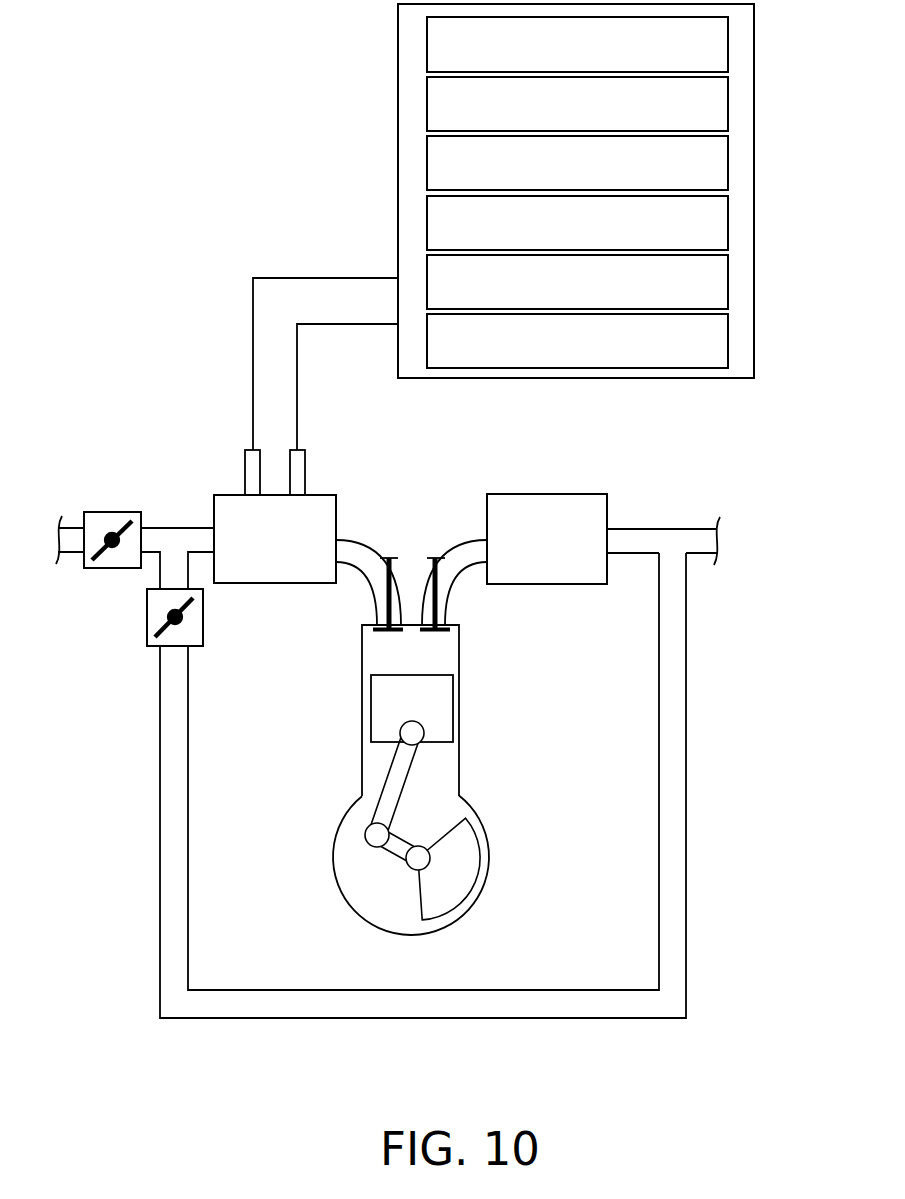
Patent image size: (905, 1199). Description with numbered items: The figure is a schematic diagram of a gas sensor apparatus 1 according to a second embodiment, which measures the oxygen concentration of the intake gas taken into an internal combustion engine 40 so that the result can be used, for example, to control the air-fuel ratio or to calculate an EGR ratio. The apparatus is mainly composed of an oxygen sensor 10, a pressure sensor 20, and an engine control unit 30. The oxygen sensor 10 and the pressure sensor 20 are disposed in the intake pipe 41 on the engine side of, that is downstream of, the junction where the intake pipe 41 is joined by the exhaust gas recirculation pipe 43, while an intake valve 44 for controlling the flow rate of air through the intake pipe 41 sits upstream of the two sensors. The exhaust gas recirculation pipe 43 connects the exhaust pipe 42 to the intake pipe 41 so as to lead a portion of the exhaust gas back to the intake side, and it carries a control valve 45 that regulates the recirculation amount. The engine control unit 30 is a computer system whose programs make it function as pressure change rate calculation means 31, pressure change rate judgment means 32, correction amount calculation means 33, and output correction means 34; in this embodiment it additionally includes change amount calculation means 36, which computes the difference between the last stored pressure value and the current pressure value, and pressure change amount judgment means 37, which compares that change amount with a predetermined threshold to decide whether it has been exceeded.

The gas sensor apparatus 1 is at (228, 206).
The oxygen sensor 10 is at (242, 468).
The pressure sensor 20 is at (307, 468).
The engine control unit 30 is at (398, 157).
The pressure change rate calculation means 31 is at (728, 40).
The pressure change rate judgment means 32 is at (728, 100).
The correction amount calculation means 33 is at (728, 278).
The output correction means 34 is at (728, 337).
The change amount calculation means 36 is at (728, 160).
The pressure change amount judgment means 37 is at (728, 220).
The internal combustion engine 40 is at (475, 783).
The intake pipe 41 is at (367, 540).
The exhaust pipe 42 is at (456, 540).
The exhaust gas recirculation pipe 43 is at (426, 1018).
The intake valve 44 is at (111, 512).
The control valve 45 is at (147, 616).